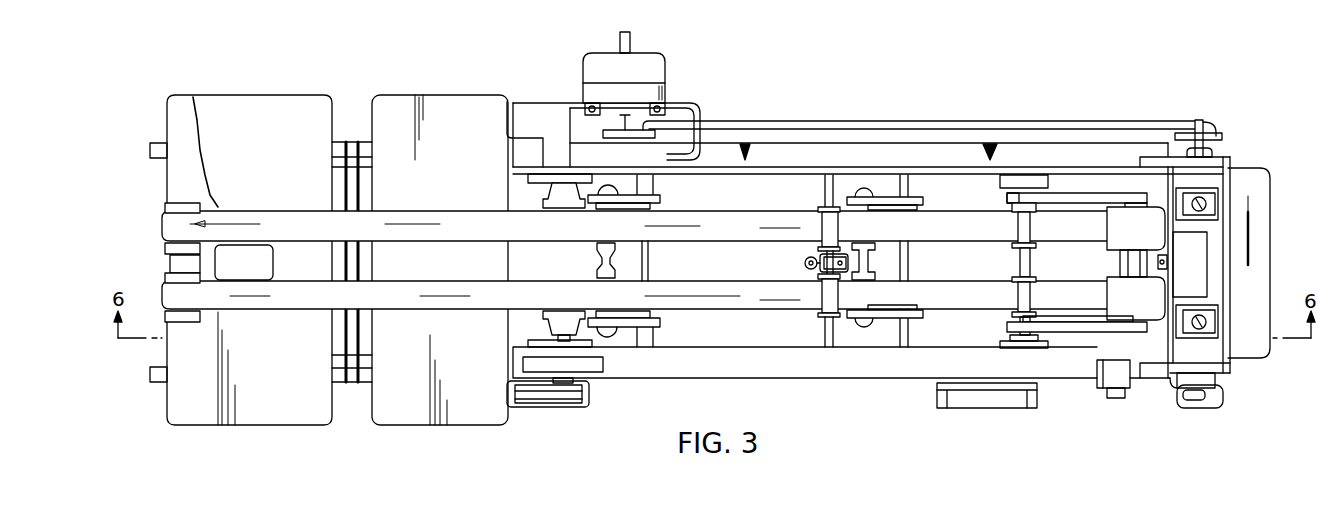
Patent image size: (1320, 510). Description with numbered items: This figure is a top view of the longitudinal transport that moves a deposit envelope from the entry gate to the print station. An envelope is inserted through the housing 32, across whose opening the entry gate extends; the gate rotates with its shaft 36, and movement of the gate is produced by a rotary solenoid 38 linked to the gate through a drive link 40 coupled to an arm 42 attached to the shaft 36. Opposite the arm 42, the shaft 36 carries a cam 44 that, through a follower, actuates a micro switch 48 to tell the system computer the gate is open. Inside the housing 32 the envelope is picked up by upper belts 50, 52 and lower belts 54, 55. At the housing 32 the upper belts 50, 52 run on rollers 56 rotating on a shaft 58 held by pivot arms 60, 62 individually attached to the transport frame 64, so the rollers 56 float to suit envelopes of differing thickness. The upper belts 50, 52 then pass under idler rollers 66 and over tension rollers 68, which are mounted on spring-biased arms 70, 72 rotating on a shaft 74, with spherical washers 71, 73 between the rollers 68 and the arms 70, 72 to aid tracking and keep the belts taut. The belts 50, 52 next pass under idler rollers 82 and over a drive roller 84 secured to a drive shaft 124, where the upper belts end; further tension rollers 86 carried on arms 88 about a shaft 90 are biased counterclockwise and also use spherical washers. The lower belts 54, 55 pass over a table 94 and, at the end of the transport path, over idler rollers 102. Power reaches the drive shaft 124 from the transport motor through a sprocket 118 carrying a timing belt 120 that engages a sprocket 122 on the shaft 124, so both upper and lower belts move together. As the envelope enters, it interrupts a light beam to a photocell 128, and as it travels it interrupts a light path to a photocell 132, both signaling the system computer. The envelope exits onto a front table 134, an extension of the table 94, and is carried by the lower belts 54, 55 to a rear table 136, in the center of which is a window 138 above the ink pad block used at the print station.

The housing 32 is at (1262, 235).
The shaft 36 is at (1213, 152).
The rotary solenoid 38 is at (666, 75).
The drive link 40 is at (1131, 120).
The arm 42 is at (1216, 136).
The cam 44 is at (1220, 400).
The micro switch 48 is at (1214, 379).
The upper belt 50 is at (956, 222).
The upper belt 52 is at (956, 305).
The lower belt 54 is at (414, 305).
The lower belt 55 is at (469, 222).
The rollers 56 is at (1118, 272).
The shaft 58 is at (1148, 206).
The pivot arm 60 is at (1090, 192).
The pivot arm 62 is at (1090, 333).
The transport frame 64 is at (925, 358).
The idler rollers 66 is at (1016, 270).
The tension rollers 68 is at (865, 256).
The supporting arm 70 is at (914, 205).
The spherical washer 71 is at (856, 196).
The supporting arm 72 is at (912, 324).
The spherical washer 73 is at (866, 302).
The shaft 74 is at (908, 262).
The idler rollers 82 is at (824, 210).
The drive roller 84 is at (550, 207).
The tension rollers 86 is at (608, 254).
The arms 88 is at (654, 203).
The shaft 90 is at (650, 270).
The table 94 is at (745, 335).
The idler rollers 102 is at (196, 270).
The sprocket 118 is at (530, 408).
The timing belt 120 is at (540, 400).
The sprocket 122 is at (581, 407).
The drive shaft 124 is at (575, 345).
The photocell 128 is at (1166, 262).
The photocell 132 is at (805, 263).
The front table 134 is at (458, 110).
The rear table 136 is at (290, 110).
The window 138 is at (270, 265).